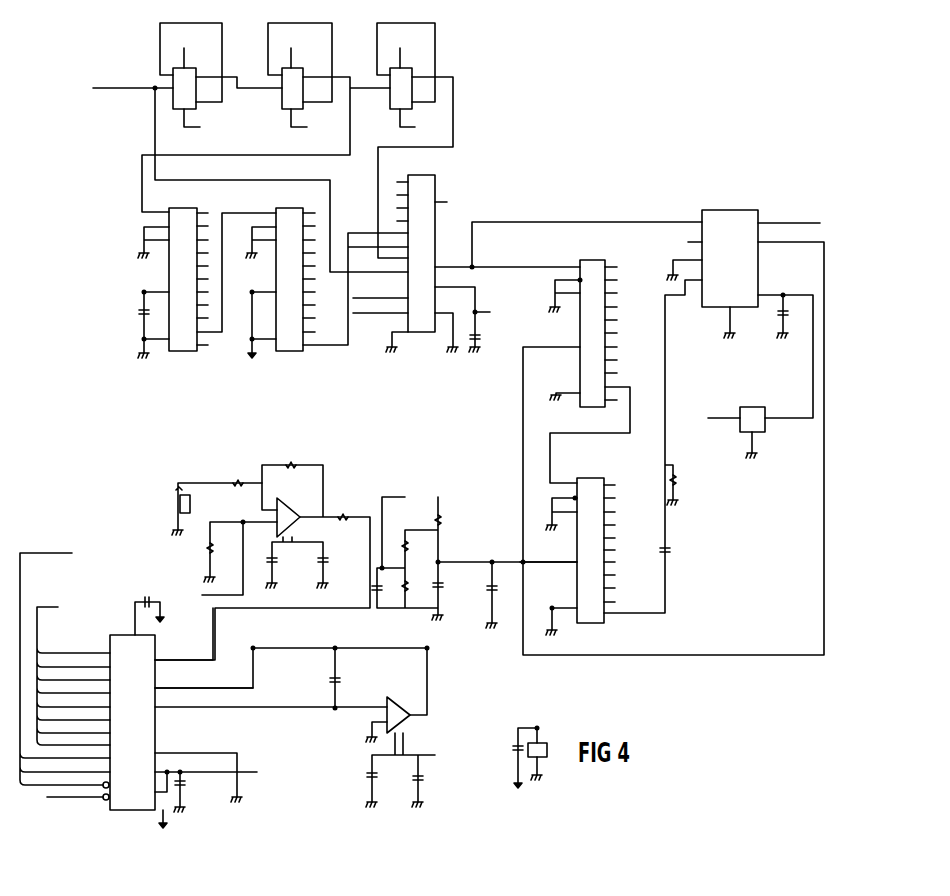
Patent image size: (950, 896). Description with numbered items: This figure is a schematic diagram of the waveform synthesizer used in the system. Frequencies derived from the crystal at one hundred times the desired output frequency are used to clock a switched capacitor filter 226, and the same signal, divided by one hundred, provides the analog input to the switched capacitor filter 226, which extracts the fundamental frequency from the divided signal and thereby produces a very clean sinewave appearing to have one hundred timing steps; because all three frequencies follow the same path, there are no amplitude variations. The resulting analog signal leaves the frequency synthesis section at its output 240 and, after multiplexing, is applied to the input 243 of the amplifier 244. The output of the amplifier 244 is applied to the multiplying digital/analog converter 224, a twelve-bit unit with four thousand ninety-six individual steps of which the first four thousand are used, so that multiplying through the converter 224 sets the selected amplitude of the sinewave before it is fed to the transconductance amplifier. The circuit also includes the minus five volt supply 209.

The multiplying digital/analog converter 224 is at (132, 790).
The switched capacitor filter 226 is at (727, 223).
The frequency synthesis section output 240 is at (789, 213).
The minus five volt supply 209 is at (754, 423).
The amplifier input 243 is at (217, 507).
The amplifier 244 is at (262, 561).